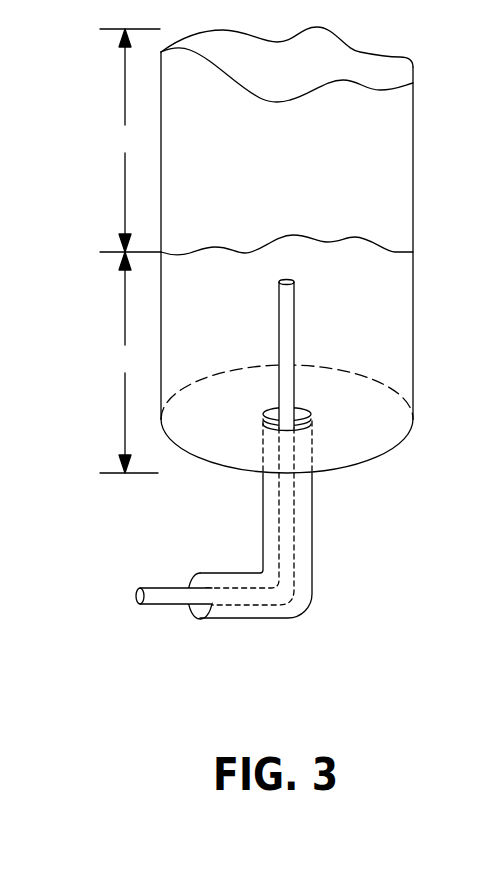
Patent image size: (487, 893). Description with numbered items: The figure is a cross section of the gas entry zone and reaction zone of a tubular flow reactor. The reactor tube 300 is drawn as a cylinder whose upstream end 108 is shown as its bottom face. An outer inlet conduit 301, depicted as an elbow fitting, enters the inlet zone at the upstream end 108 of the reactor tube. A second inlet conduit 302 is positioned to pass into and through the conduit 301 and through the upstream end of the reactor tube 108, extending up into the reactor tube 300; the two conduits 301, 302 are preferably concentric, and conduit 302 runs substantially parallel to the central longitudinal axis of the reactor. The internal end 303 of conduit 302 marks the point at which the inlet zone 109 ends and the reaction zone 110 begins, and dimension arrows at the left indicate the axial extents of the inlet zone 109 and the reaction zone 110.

The reaction zone 110 is at (130, 140).
The inlet zone 109 is at (130, 362).
The reactor tube 300 is at (473, 270).
The upstream end of the reactor tube 108 is at (206, 462).
The inlet conduit 301 is at (312, 566).
The inlet conduit 302 is at (163, 588).
The internal end of conduit 303 is at (296, 283).